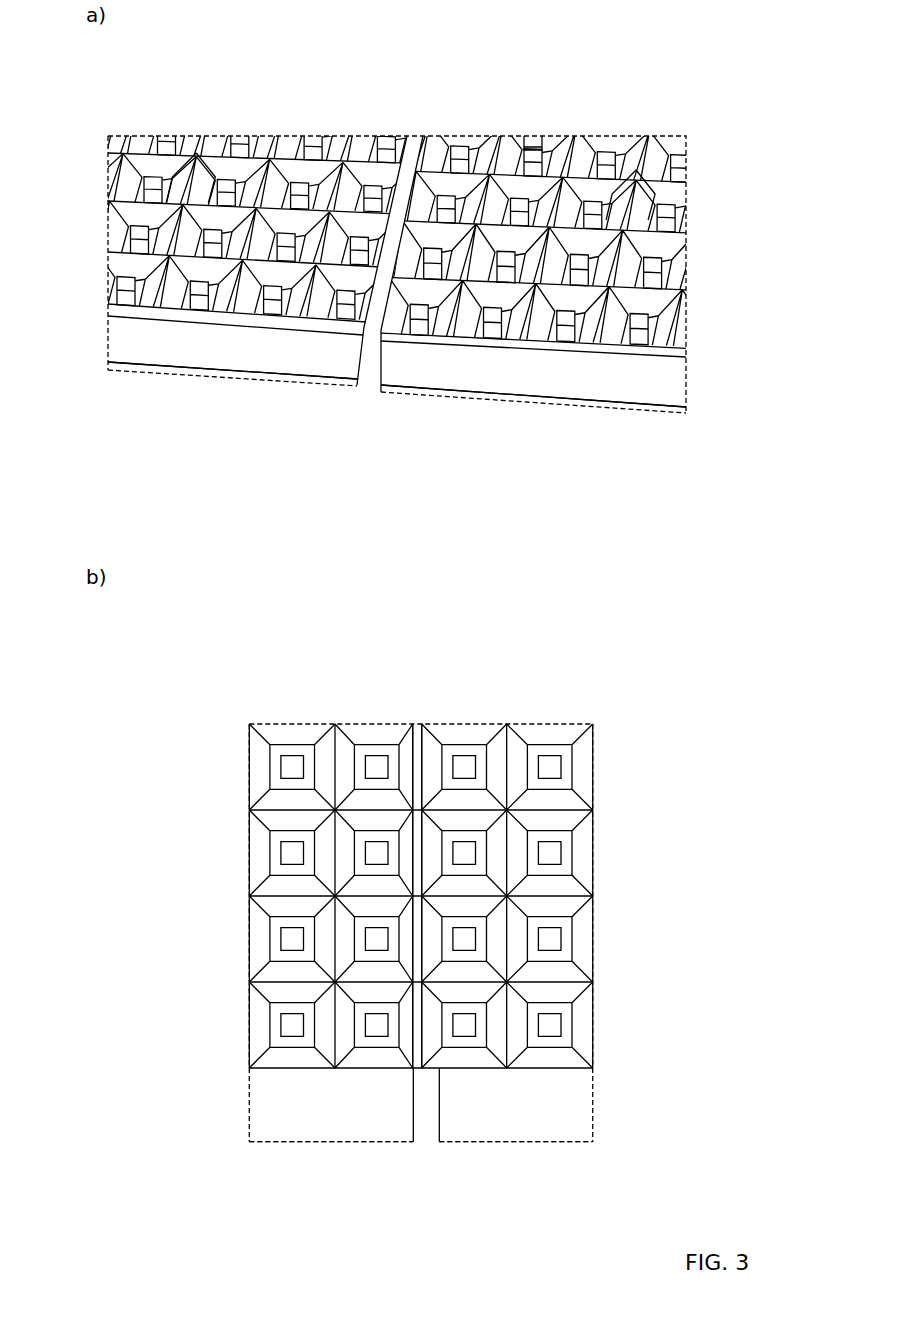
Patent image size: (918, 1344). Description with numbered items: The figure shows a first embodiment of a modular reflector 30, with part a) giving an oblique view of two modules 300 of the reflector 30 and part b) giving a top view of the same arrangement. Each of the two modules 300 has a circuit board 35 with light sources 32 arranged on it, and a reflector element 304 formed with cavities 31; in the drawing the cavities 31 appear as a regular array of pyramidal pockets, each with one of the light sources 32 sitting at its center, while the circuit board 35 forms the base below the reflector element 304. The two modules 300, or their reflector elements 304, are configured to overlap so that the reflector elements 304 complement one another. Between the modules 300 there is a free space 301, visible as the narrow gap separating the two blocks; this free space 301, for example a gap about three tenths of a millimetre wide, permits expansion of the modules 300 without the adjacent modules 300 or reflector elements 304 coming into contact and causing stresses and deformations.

The reflector 30 is at (389, 96).
The cavities 31 is at (690, 252).
The light sources 32 is at (531, 138).
The free space 301 is at (365, 332).
The reflector element 304 is at (231, 157).
The circuit board 35 is at (189, 373).
The modules 300 is at (243, 383).